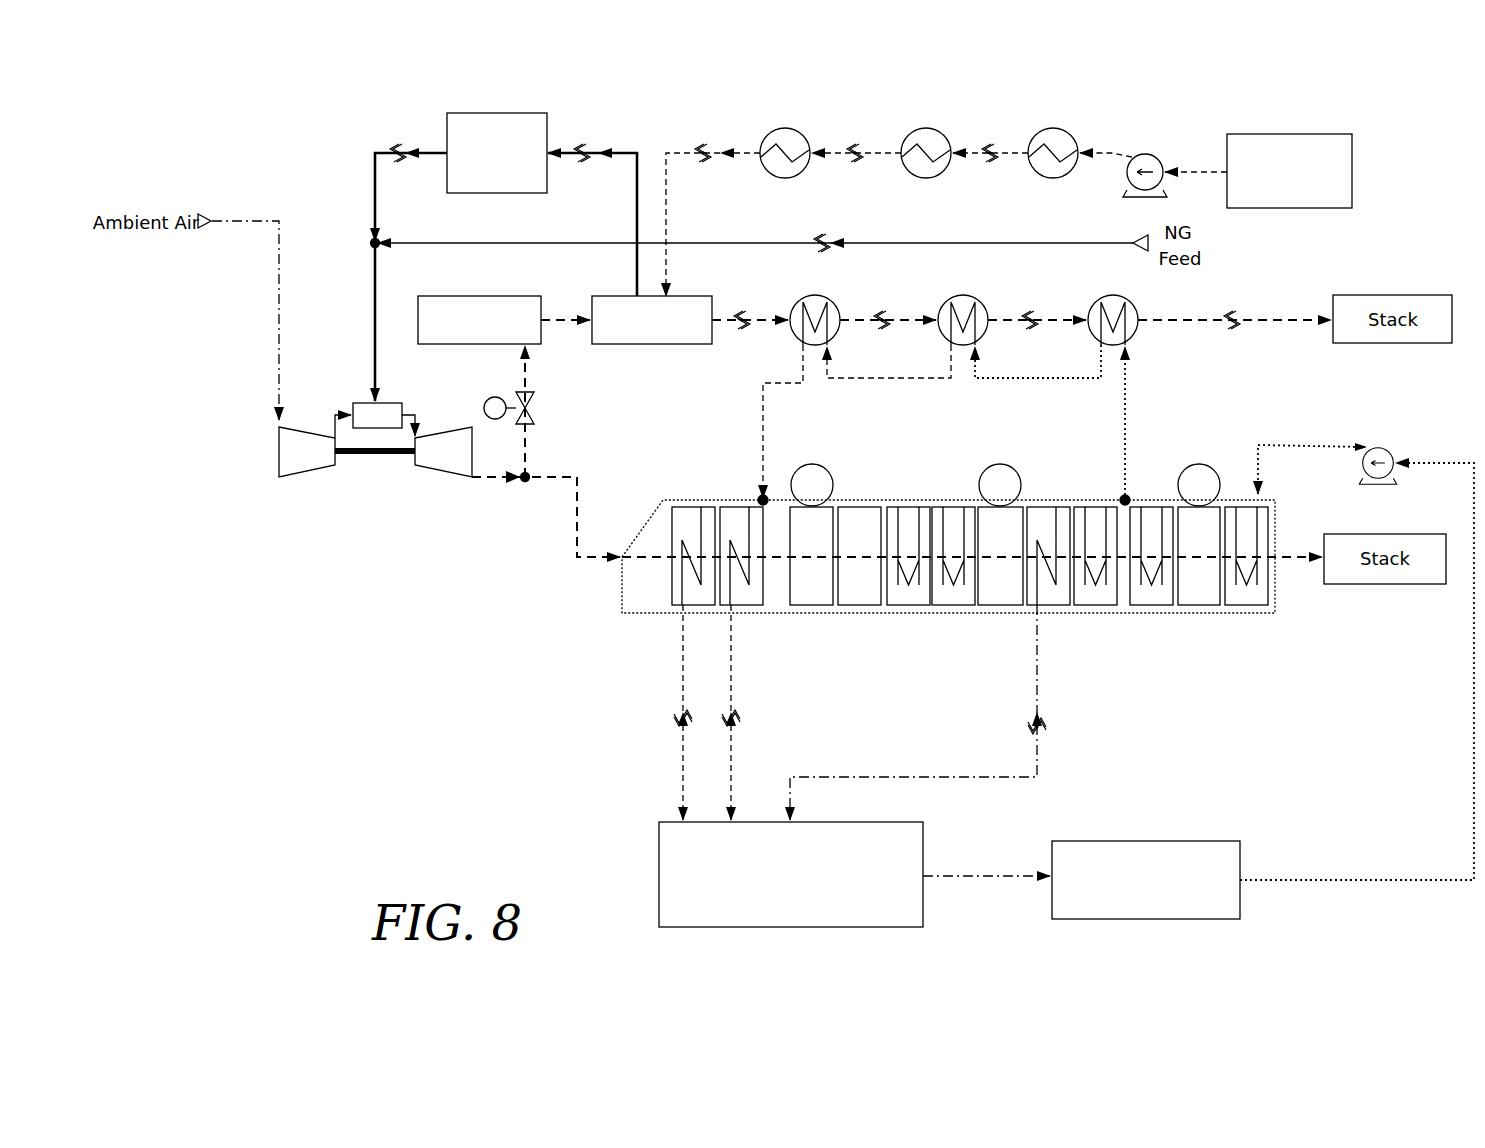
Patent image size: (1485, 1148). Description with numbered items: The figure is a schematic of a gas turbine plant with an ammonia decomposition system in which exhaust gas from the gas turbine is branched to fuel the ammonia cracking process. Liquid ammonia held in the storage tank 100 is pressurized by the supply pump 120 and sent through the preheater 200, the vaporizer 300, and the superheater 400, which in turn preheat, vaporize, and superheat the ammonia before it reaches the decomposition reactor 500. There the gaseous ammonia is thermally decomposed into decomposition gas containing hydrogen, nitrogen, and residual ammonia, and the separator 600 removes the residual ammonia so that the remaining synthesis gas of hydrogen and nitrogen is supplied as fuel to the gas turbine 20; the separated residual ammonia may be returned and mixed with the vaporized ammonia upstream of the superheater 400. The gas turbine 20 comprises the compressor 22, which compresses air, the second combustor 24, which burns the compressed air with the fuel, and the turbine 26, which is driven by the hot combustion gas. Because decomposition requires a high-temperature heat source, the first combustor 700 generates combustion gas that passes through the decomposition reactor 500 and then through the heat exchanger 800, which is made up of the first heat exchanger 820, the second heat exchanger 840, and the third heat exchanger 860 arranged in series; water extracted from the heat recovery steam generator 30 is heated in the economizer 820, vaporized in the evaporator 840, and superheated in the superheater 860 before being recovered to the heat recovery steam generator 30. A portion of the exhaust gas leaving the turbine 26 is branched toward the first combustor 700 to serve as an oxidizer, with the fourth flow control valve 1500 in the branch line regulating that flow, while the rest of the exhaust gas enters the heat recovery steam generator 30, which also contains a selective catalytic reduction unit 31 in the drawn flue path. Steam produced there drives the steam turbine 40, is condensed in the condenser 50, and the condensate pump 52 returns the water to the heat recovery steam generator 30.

The storage tank 100 is at (1287, 134).
The supply pump 120 is at (1148, 155).
The preheater 200 is at (1053, 128).
The vaporizer 300 is at (926, 128).
The superheater 400 is at (785, 128).
The decomposition reactor 500 is at (648, 344).
The separator 600 is at (496, 112).
The first combustor 700 is at (478, 296).
The heat exchanger 800 is at (711, 531).
The first heat exchanger 820 is at (1110, 295).
The second heat exchanger 840 is at (960, 295).
The third heat exchanger 860 is at (812, 295).
The fourth flow control valve 1500 is at (534, 412).
The gas turbine 20 is at (375, 487).
The compressor 22 is at (309, 455).
The second combustor 24 is at (371, 420).
The turbine 26 is at (443, 473).
The heat recovery steam generator 30 is at (972, 596).
The selective catalytic reduction unit 31 is at (858, 507).
The steam turbine 40 is at (659, 874).
The condenser 50 is at (1148, 841).
The condensate pump 52 is at (1375, 449).